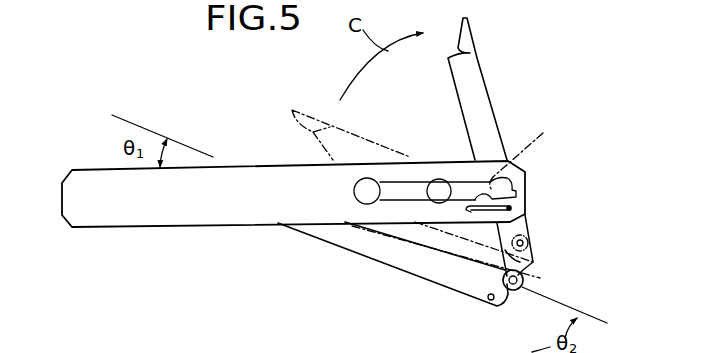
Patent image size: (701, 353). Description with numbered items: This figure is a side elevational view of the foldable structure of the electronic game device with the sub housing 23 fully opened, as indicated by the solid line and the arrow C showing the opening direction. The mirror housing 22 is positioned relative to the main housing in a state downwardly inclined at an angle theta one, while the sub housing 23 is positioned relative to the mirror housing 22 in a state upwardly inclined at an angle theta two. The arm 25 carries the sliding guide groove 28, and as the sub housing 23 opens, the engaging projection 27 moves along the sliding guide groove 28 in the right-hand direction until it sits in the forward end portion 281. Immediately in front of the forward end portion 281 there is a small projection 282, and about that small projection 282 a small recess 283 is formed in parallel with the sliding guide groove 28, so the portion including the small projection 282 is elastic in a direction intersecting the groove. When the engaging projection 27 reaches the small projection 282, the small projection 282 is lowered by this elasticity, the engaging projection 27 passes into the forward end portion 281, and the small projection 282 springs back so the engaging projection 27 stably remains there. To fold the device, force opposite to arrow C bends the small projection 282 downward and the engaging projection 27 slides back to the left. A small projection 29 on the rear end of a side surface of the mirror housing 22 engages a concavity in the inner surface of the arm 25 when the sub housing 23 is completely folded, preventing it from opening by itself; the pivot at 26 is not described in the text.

The mirror housing 22 is at (358, 255).
The sub housing 23 is at (480, 83).
The arm 25 is at (195, 224).
The pivot pin 26 is at (528, 240).
The engaging projection 27 is at (440, 179).
The sliding guide groove 28 is at (408, 188).
The small projection 29 is at (533, 262).
The forward end portion 281 is at (512, 180).
The small projection 282 is at (491, 193).
The small recess 283 is at (513, 205).